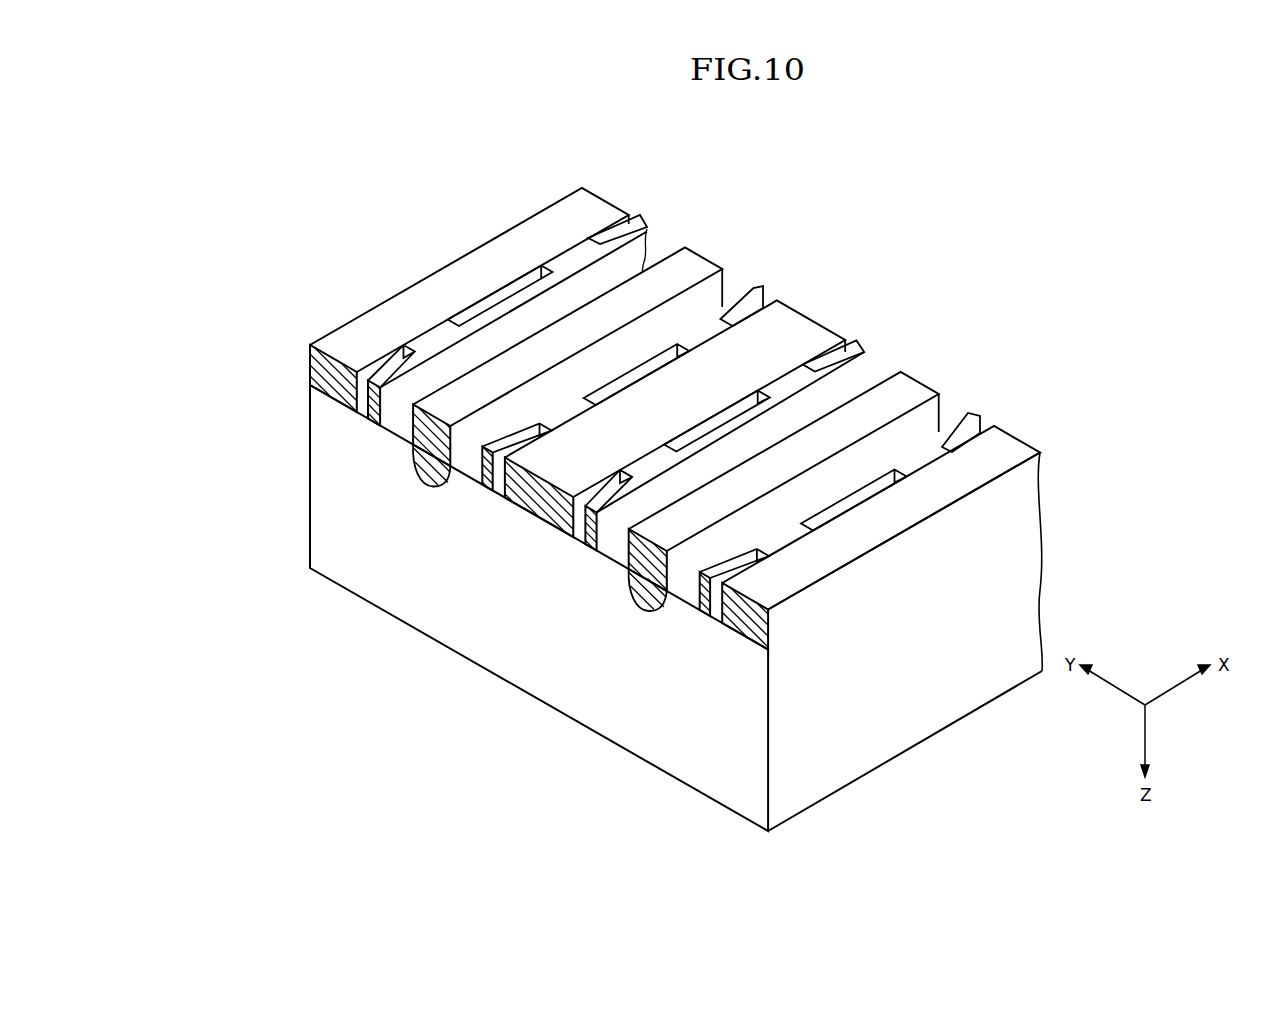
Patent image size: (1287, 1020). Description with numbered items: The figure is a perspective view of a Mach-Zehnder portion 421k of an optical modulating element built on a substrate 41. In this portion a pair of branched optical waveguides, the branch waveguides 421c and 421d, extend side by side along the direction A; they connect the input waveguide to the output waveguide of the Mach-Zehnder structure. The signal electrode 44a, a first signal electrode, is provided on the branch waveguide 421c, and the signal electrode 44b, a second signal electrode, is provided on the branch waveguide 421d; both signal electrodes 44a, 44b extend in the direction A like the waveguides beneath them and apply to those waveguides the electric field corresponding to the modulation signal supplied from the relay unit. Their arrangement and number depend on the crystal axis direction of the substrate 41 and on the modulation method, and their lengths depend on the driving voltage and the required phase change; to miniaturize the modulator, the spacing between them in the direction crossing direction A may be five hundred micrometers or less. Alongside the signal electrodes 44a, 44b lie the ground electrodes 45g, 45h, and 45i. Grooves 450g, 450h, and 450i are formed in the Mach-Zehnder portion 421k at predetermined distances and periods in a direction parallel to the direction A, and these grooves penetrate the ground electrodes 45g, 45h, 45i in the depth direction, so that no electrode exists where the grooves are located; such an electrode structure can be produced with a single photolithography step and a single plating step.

The substrate 41 is at (725, 753).
The ground electrode 45i is at (309, 355).
The ground electrode 45g is at (600, 537).
The ground electrode 45h is at (775, 631).
The signal electrode 44a is at (661, 572).
The signal electrode 44b is at (418, 430).
The groove 450i is at (643, 212).
The groove 450g is at (773, 296).
The groove 450h is at (989, 424).
The branch waveguide 421c is at (647, 611).
The branch waveguide 421d is at (437, 487).
The Mach-Zehnder portion 421k is at (1079, 272).